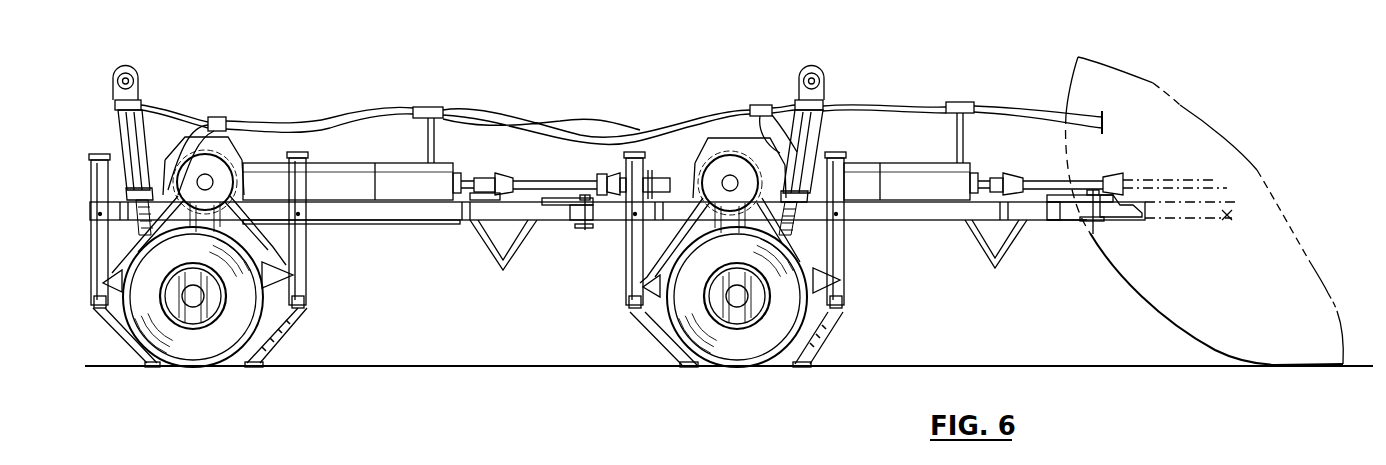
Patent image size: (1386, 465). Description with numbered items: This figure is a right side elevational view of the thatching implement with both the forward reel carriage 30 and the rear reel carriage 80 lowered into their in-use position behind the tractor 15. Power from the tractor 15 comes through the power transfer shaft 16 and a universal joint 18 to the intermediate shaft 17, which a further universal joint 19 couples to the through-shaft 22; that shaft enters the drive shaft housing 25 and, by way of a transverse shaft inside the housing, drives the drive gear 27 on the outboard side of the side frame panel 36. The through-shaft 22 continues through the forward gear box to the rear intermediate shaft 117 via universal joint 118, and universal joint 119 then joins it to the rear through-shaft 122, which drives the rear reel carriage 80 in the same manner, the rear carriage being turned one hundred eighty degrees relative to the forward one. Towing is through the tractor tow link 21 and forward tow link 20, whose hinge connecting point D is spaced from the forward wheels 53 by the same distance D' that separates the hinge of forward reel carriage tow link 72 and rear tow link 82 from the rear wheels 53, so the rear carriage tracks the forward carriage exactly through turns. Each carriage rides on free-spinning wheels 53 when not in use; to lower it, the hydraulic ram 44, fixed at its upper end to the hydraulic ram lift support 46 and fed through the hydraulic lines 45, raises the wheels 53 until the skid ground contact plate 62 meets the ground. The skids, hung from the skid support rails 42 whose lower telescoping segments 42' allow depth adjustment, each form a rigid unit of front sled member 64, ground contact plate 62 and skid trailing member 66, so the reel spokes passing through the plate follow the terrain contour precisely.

The tractor 15 is at (1281, 154).
The power transfer shaft 16 is at (1180, 185).
The intermediate shaft 17 is at (1040, 202).
The universal joint 18 is at (1130, 200).
The universal joint 19 is at (985, 222).
The forward tow link 20 is at (1226, 214).
The tractor tow link 21 is at (925, 220).
The through-shaft 22 is at (621, 134).
The drive shaft housing 25 is at (382, 170).
The drive gear 27 is at (193, 188).
The forward reel carriage 30 is at (824, 59).
The side frame panel 36 is at (290, 268).
The skid support rail 42 is at (463, 215).
The lower skid support rail 42' is at (465, 268).
The hydraulic ram 44 is at (120, 128).
The hydraulic lines 45 is at (1010, 108).
The hydraulic ram lift support 46 is at (114, 86).
The wheel 53 is at (213, 368).
The ground contact plate 62 is at (157, 368).
The front sled member 64 is at (296, 334).
The skid trailing member 66 is at (112, 337).
The forward reel carriage tow link 72 is at (612, 226).
The rear reel carriage 80 is at (278, 106).
The rear tow link 82 is at (387, 224).
The rear intermediate shaft 117 is at (553, 181).
The universal joint 118 is at (600, 172).
The universal joint 119 is at (483, 200).
The rear through-shaft 122 is at (467, 176).
The hinge connecting point D is at (1077, 233).
The depth dimension D' is at (562, 226).